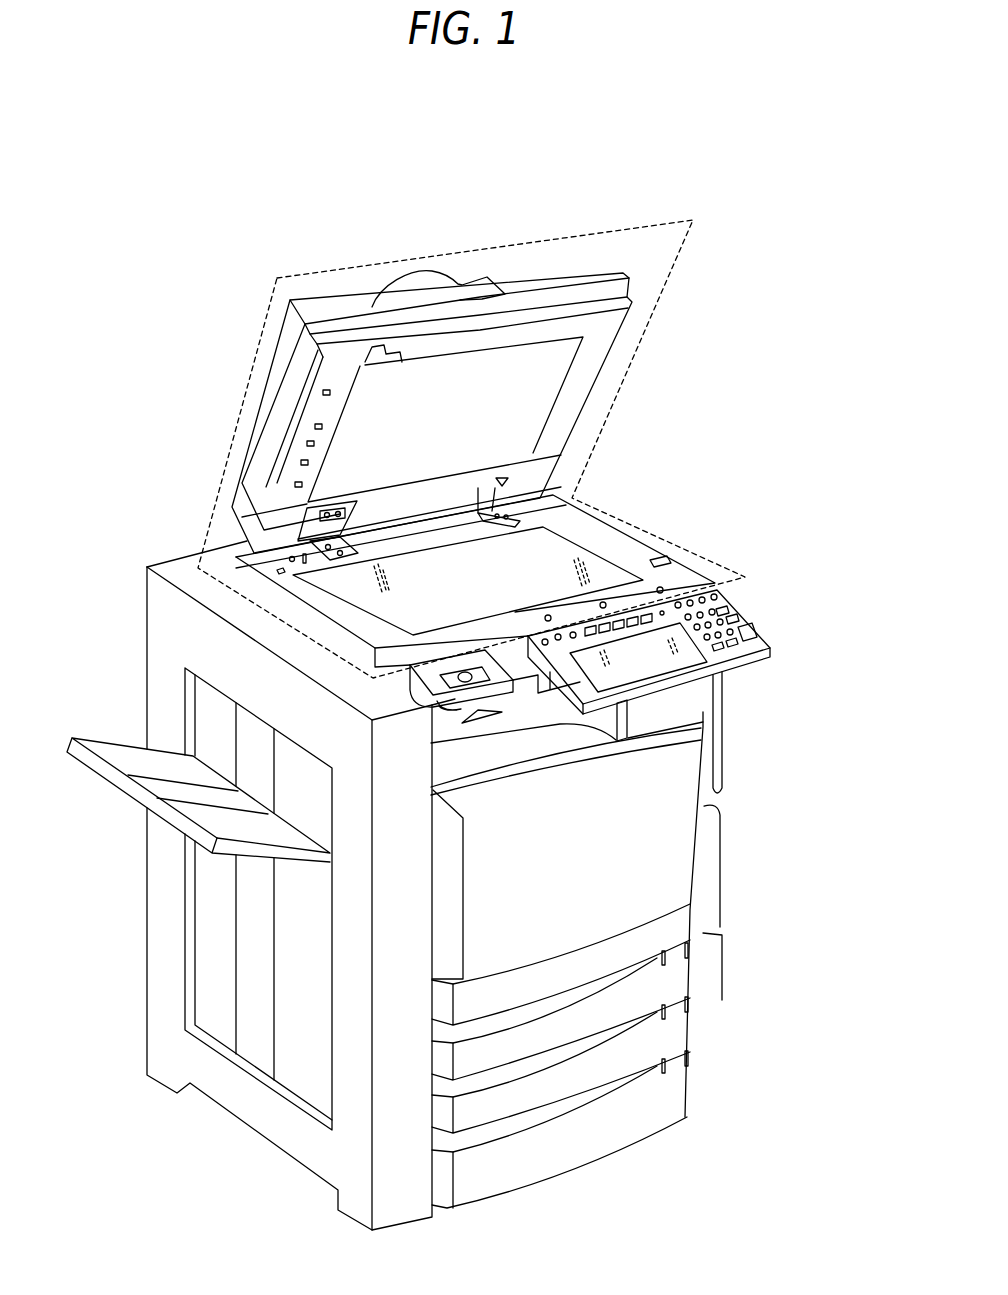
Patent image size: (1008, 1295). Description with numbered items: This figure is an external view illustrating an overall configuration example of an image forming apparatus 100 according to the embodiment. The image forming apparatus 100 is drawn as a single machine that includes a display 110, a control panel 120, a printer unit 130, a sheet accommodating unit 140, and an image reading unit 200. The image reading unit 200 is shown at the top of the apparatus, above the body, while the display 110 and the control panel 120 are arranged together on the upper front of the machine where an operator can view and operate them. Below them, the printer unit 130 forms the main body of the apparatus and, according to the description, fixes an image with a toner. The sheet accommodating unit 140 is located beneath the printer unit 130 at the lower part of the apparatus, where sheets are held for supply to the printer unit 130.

The image forming apparatus 100 is at (458, 655).
The display 110 is at (663, 637).
The control panel 120 is at (752, 634).
The printer unit 130 is at (672, 880).
The sheet accommodating unit 140 is at (707, 935).
The image reading unit 200 is at (622, 232).